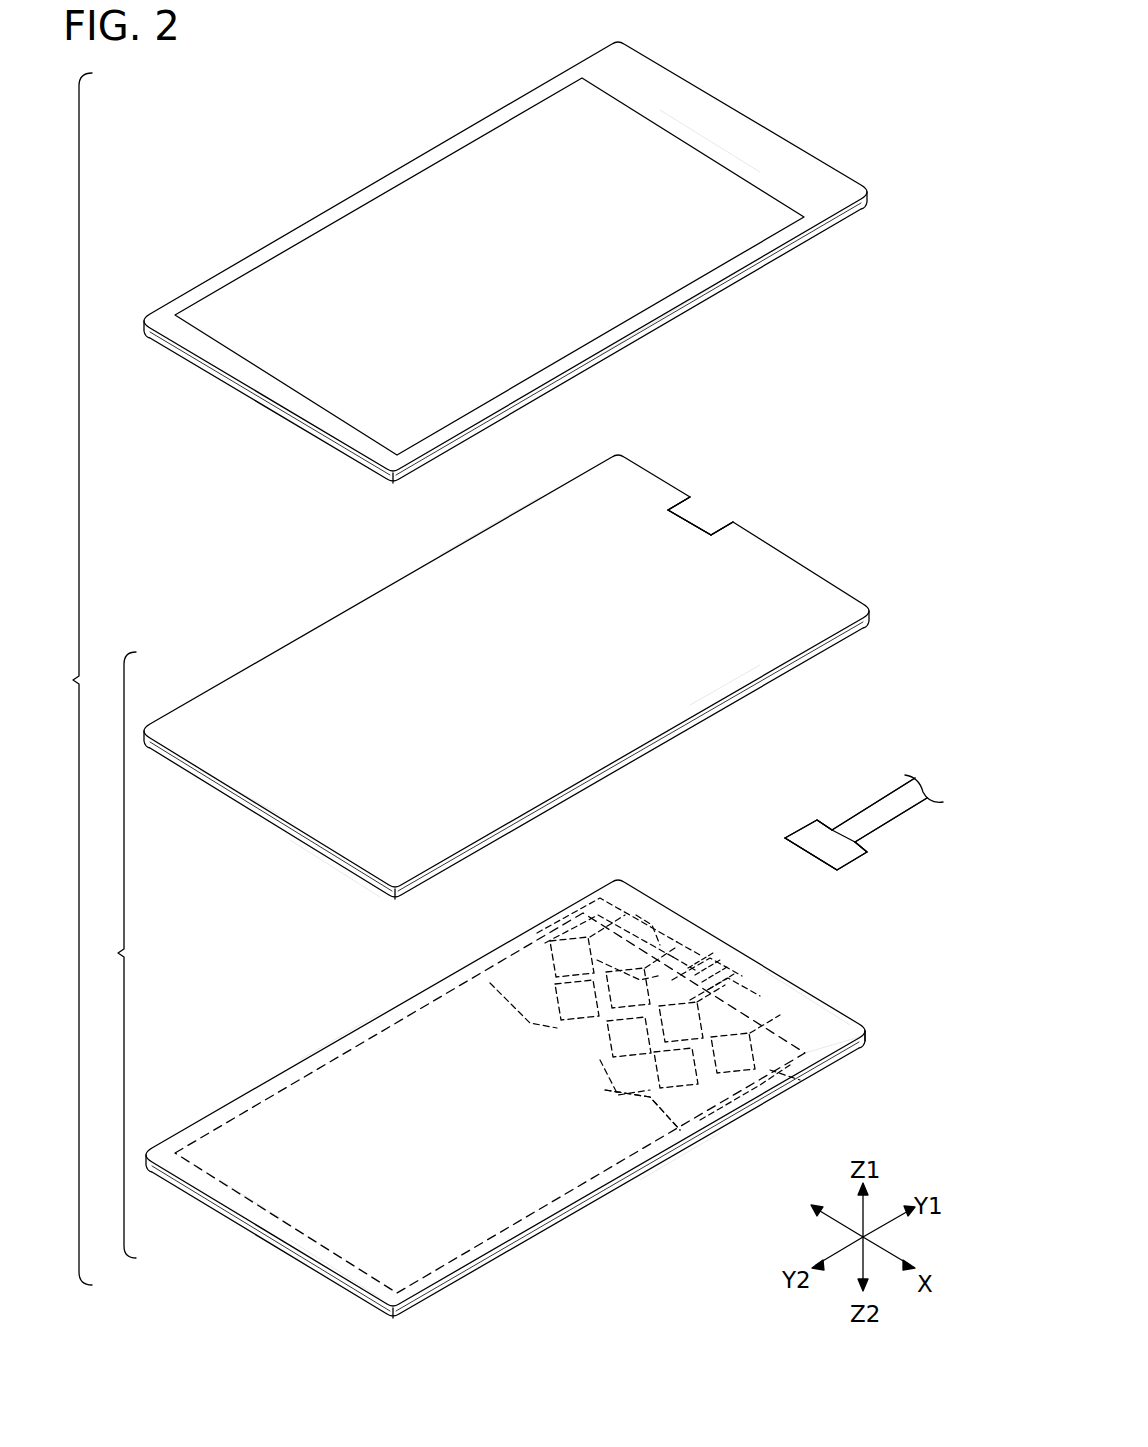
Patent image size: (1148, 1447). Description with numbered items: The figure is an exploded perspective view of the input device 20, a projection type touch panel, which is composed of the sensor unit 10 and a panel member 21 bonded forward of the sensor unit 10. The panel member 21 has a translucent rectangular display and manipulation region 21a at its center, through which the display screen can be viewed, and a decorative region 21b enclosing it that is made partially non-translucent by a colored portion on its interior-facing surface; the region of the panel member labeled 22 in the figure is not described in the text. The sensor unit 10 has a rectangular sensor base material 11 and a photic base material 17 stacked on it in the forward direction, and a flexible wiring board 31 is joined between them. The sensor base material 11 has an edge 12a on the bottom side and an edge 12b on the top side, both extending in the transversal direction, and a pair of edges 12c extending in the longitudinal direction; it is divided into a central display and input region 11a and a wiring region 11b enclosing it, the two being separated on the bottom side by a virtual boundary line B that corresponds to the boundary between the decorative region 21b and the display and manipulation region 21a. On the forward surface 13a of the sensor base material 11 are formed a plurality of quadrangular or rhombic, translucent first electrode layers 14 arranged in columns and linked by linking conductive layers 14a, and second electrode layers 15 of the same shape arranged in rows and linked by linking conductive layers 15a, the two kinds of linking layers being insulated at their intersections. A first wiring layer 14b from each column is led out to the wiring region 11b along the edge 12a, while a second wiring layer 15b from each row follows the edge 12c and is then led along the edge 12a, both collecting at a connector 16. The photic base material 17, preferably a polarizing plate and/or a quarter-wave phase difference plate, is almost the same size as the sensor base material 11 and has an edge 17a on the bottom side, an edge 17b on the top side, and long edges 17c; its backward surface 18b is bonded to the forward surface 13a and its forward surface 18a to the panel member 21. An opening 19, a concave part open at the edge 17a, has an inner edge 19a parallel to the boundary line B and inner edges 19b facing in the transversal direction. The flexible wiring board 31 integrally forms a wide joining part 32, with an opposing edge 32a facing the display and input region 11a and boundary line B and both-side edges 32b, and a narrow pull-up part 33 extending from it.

The sensor unit 10 is at (112, 955).
The sensor base material 11 is at (534, 1239).
The display and input region 11a is at (247, 1186).
The wiring region 11b is at (852, 1040).
The edge on the bottom side 12a is at (826, 1000).
The edge on the top side 12b is at (326, 1286).
The edge on the long edge side 12c is at (345, 1018).
The forward surface 13a is at (268, 1060).
The first electrode layer 14 is at (660, 1086).
The linking conductive layer 14a is at (640, 1110).
The first wiring layer 14b is at (652, 918).
The second electrode layer 15 is at (552, 906).
The linking conductive layer 15a is at (572, 925).
The second wiring layer 15b is at (686, 936).
The connector 16 is at (708, 942).
The photic base material 17 is at (260, 666).
The edge on the bottom side 17a is at (815, 572).
The edge on the top side 17b is at (236, 800).
The edge on the long-edge side 17c is at (340, 612).
The forward surface 18a is at (487, 556).
The backward surface 18b is at (328, 855).
The opening 19 is at (712, 515).
The inner edge 19a is at (690, 528).
The inner edge 19b is at (700, 500).
The input device 20 is at (67, 679).
The panel member 21 is at (833, 149).
The display and manipulation region 21a is at (650, 282).
The decorative region 21b is at (712, 120).
The transparent window region 22 is at (472, 192).
The flexible wiring board 31 is at (868, 845).
The joining part 32 is at (852, 864).
The opposing edge 32a is at (812, 850).
The both-side edge 32b is at (810, 824).
The pull-up part 33 is at (886, 807).
The boundary line B is at (812, 1032).